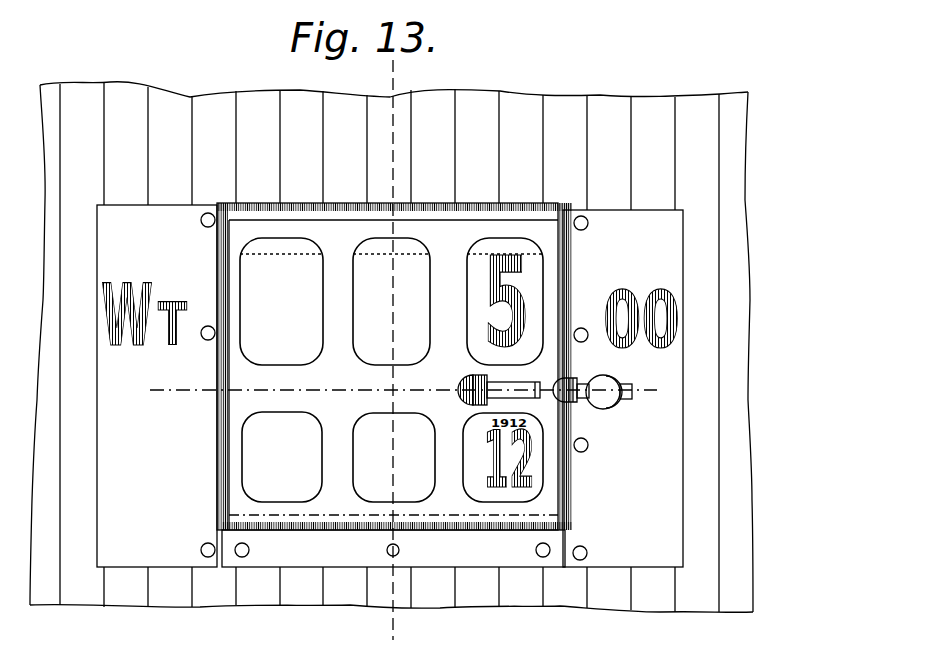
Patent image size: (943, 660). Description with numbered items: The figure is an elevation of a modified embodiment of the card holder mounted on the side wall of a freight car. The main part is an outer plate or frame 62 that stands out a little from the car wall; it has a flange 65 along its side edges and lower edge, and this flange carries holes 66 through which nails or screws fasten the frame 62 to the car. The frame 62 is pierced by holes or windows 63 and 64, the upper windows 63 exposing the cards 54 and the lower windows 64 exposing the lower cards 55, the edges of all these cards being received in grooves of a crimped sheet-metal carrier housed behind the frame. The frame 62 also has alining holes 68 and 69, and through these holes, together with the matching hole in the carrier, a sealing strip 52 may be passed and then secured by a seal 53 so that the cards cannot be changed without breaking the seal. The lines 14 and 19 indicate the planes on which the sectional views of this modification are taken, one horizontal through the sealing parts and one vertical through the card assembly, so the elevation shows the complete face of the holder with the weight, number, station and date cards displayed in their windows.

The section line 14 is at (175, 365).
The section line 19 is at (427, 621).
The sealing strip 52 is at (583, 399).
The seal 53 is at (622, 398).
The cards 54 is at (311, 285).
The lower cards 55 is at (322, 466).
The outer plate or frame 62 is at (394, 366).
The holes or windows 63 is at (440, 283).
The holes or windows 64 is at (433, 442).
The flange 65 is at (393, 548).
The holes 66 is at (387, 550).
The alining hole 68 is at (574, 382).
The alining hole 69 is at (465, 404).